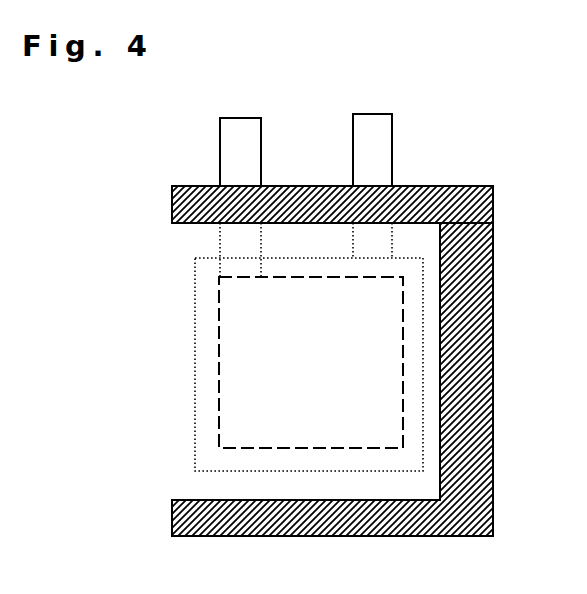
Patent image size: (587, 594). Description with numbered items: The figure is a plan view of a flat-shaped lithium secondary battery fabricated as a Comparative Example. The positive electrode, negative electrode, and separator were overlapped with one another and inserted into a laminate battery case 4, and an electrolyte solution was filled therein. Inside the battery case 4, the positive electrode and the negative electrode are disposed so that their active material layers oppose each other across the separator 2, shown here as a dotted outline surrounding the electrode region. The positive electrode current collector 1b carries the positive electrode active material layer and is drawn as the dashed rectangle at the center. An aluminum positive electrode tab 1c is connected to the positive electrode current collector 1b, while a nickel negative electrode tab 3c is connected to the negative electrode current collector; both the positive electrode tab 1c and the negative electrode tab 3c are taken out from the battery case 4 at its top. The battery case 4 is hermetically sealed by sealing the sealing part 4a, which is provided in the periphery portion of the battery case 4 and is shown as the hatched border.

The positive electrode current collector 1b is at (311, 362).
The positive electrode tab 1c is at (220, 197).
The negative electrode tab 3c is at (392, 186).
The separator 2 is at (195, 290).
The battery case 4 is at (172, 256).
The sealing part 4a is at (172, 207).